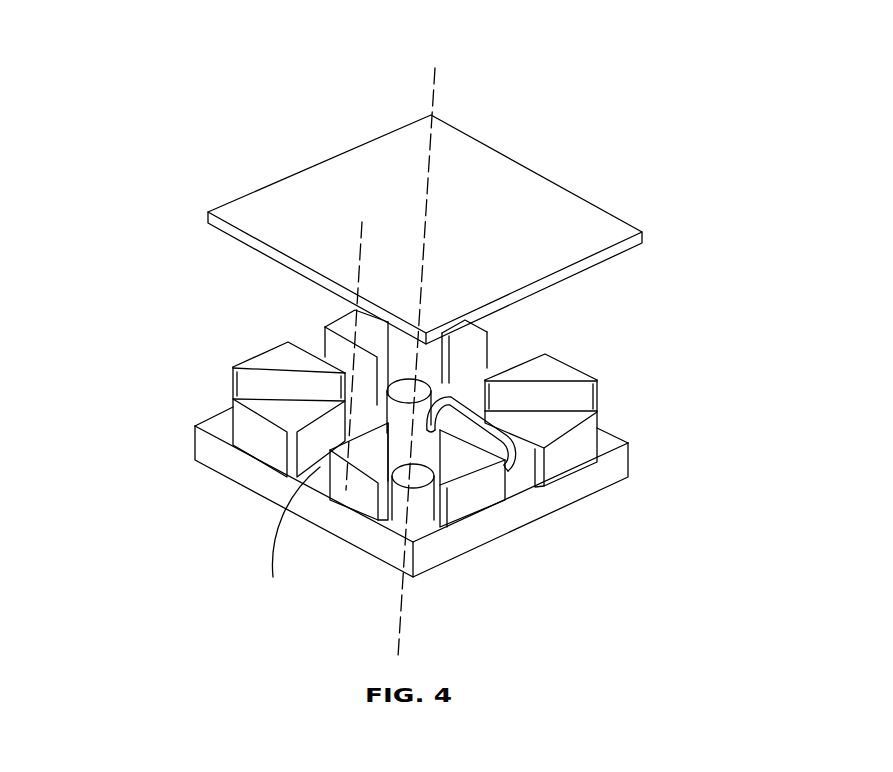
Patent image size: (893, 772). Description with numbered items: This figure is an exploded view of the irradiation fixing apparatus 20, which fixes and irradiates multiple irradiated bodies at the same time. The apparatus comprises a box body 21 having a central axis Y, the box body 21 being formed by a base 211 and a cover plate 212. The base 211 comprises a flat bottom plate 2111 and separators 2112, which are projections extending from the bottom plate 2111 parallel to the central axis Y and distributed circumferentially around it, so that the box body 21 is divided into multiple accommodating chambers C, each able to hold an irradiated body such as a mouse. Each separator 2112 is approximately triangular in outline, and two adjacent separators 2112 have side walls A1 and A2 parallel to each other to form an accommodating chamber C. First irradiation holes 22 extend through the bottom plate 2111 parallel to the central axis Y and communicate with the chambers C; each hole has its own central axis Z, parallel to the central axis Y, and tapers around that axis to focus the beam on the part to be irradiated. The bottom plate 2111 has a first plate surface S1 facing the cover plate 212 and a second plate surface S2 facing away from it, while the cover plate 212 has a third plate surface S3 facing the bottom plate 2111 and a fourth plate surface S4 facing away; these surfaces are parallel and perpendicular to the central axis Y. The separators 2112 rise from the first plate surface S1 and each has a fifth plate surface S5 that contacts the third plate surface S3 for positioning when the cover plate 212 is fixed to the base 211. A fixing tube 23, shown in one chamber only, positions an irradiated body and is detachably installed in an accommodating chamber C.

The irradiation fixing apparatus 20 is at (416, 333).
The box body 21 is at (416, 435).
The base 211 is at (406, 492).
The bottom plate 2111 is at (620, 457).
The separators 2112 is at (586, 409).
The cover plate 212 is at (395, 229).
The first irradiation holes 22 is at (427, 492).
The fixing tube 23 is at (512, 462).
The side wall A1 is at (488, 353).
The side wall A2 is at (503, 363).
The first plate surface S1 is at (218, 427).
The second plate surface S2 is at (210, 467).
The third plate surface S3 is at (257, 250).
The fourth plate surface S4 is at (245, 218).
The fifth plate surface S5 is at (257, 362).
The central axis Y is at (437, 100).
The central axis Z is at (360, 257).
The accommodating chamber C is at (296, 532).